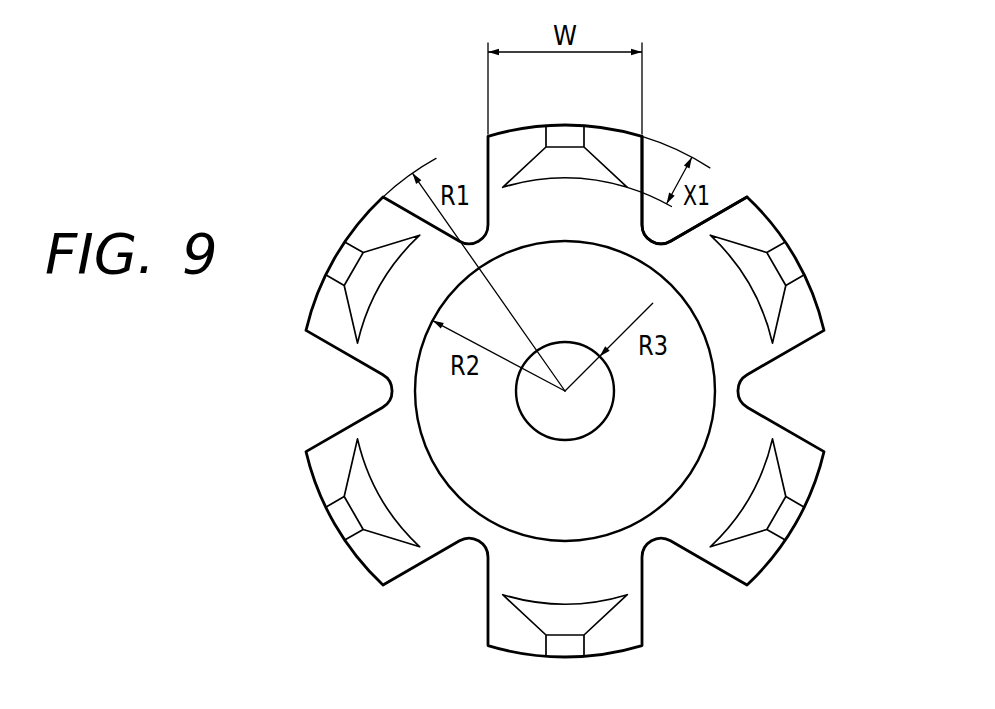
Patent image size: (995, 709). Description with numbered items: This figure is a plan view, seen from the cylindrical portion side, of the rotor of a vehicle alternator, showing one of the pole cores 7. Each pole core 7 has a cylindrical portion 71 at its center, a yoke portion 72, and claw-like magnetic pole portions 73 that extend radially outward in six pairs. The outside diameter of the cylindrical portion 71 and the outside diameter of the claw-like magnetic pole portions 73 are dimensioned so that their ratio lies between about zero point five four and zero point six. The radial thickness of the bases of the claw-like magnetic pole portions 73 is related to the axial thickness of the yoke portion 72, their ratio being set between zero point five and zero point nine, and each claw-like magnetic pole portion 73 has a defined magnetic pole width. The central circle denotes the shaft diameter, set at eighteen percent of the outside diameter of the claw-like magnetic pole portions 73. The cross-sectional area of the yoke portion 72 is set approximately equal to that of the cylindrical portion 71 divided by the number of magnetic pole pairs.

The pole core 7 is at (782, 552).
The cylindrical portion 71 is at (617, 515).
The yoke portion 72 is at (672, 240).
The claw-like magnetic pole portion 73 is at (622, 132).